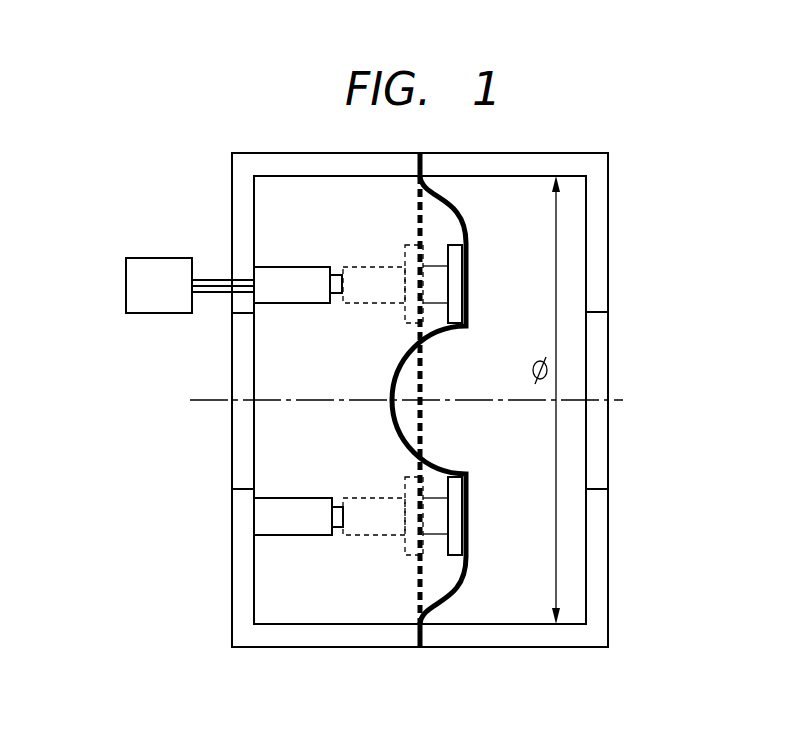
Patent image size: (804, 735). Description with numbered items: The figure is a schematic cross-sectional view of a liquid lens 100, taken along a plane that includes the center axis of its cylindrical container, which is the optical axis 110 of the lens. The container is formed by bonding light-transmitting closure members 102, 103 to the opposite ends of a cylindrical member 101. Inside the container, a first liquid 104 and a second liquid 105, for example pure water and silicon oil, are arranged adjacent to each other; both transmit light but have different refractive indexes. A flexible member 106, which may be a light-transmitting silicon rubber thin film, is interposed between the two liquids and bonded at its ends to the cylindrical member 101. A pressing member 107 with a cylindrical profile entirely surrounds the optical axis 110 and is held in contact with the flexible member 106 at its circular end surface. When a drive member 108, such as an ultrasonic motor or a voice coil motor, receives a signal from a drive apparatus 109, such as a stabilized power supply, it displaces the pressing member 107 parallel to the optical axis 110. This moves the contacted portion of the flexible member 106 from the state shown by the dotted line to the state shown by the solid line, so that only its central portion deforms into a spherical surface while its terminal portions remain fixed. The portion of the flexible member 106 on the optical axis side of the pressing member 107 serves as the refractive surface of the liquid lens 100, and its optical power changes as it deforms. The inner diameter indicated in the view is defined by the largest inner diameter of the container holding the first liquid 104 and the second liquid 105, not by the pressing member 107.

The liquid lens 100 is at (176, 138).
The cylindrical member 101 is at (232, 182).
The closure member 102 is at (232, 447).
The closure member 103 is at (608, 433).
The first liquid 104 is at (334, 449).
The second liquid 105 is at (513, 448).
The flexible member 106 is at (435, 335).
The pressing member 107 is at (455, 243).
The drive member 108 is at (297, 296).
The drive apparatus 109 is at (126, 285).
The optical axis 110 is at (203, 398).